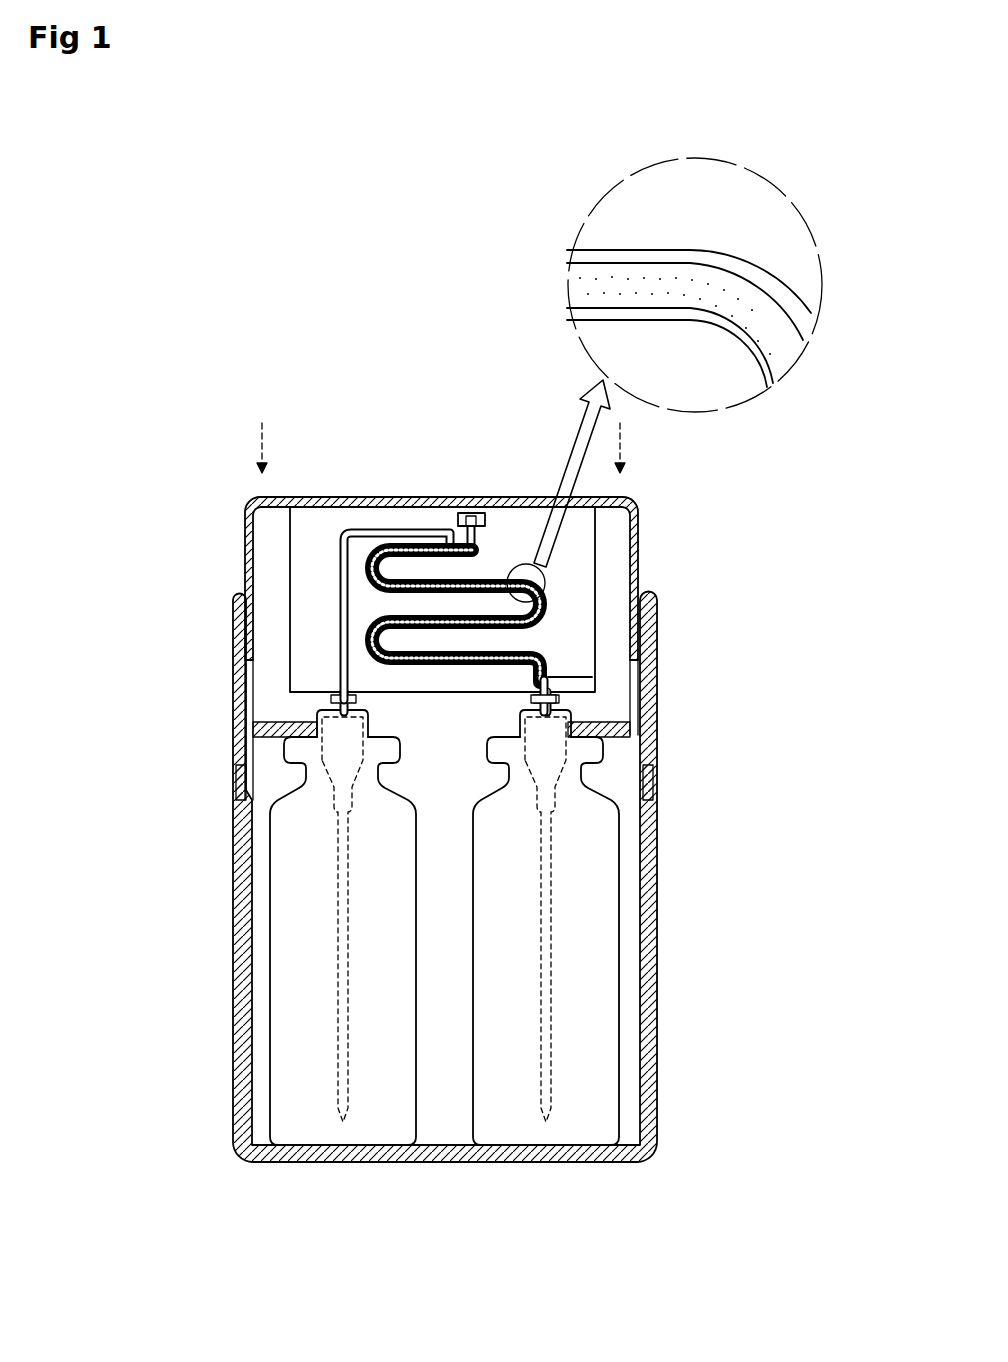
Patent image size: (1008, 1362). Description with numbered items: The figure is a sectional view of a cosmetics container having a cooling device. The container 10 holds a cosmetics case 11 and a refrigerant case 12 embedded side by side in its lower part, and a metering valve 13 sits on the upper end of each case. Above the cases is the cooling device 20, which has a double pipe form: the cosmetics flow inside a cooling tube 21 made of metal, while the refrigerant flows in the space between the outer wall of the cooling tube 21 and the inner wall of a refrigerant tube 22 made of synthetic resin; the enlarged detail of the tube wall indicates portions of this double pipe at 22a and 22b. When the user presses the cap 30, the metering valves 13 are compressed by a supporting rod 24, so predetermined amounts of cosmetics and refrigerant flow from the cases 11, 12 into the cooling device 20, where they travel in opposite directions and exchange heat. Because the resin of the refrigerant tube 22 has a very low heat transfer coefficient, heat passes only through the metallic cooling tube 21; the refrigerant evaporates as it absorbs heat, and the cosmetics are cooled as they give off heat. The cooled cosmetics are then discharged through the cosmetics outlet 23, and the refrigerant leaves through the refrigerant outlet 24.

The container 10 is at (657, 1062).
The cosmetics case 11 is at (332, 757).
The refrigerant case 12 is at (290, 928).
The metering valve 13 is at (600, 925).
The cooling device 20 is at (588, 535).
The cooling tube 21 is at (574, 282).
The refrigerant tube 22 is at (800, 308).
The inlet pipe 22a is at (342, 628).
The tube inner layer 22b is at (738, 265).
The cosmetics outlet 23 is at (461, 513).
The refrigerant outlet 24 is at (565, 670).
The cap 30 is at (300, 497).